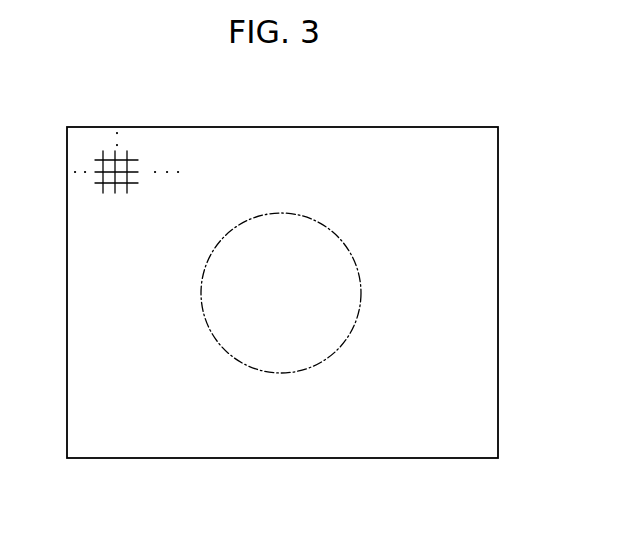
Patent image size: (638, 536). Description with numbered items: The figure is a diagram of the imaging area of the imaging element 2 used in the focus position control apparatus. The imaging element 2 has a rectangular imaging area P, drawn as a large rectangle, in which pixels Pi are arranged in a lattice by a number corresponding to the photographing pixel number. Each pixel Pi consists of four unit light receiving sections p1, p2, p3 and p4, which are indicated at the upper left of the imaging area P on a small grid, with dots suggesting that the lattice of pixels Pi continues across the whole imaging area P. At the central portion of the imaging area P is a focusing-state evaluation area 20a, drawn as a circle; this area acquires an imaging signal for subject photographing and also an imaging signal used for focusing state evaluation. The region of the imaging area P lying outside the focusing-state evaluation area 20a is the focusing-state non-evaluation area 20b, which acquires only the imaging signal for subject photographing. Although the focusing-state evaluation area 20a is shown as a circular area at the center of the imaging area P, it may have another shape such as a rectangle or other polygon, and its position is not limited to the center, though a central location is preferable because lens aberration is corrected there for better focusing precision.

The imaging element 2 is at (475, 99).
The imaging area P is at (462, 197).
The focusing-state evaluation area 20a is at (298, 337).
The focusing-state non-evaluation area 20b is at (455, 335).
The unit light receiving section p1 is at (105, 166).
The unit light receiving section p2 is at (125, 158).
The unit light receiving section p3 is at (106, 178).
The unit light receiving section p4 is at (122, 194).
The pixel Pi is at (129, 151).